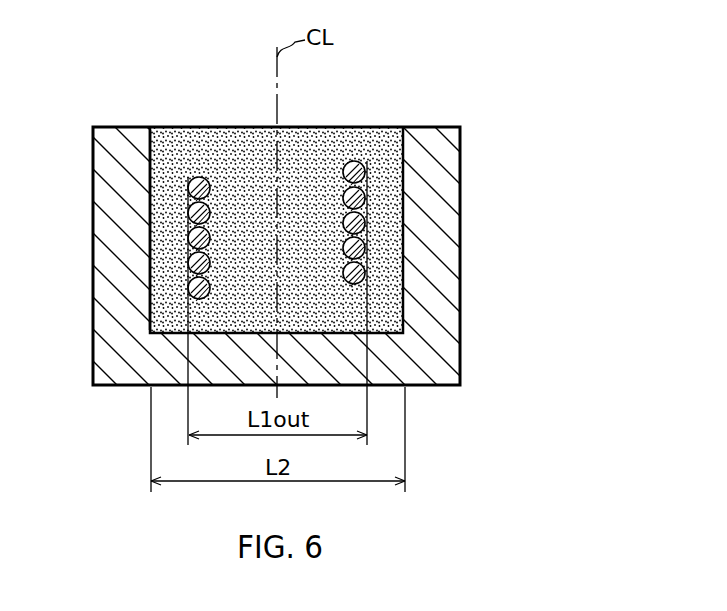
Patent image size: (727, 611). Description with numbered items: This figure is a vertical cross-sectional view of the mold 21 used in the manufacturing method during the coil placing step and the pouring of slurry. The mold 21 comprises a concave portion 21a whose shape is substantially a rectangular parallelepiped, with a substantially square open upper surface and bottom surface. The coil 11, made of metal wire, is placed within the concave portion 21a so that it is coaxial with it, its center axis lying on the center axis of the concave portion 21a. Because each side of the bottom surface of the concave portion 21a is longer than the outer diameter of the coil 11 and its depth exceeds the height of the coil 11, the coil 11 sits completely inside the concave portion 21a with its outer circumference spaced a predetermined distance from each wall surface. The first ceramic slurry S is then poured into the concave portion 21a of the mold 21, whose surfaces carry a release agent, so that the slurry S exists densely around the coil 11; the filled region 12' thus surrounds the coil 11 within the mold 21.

The coil 11 is at (366, 199).
The resin/filler in cavity 12' is at (276, 206).
The mold 21 is at (461, 250).
The concave portion 21a is at (151, 212).
The first ceramic slurry S is at (363, 116).